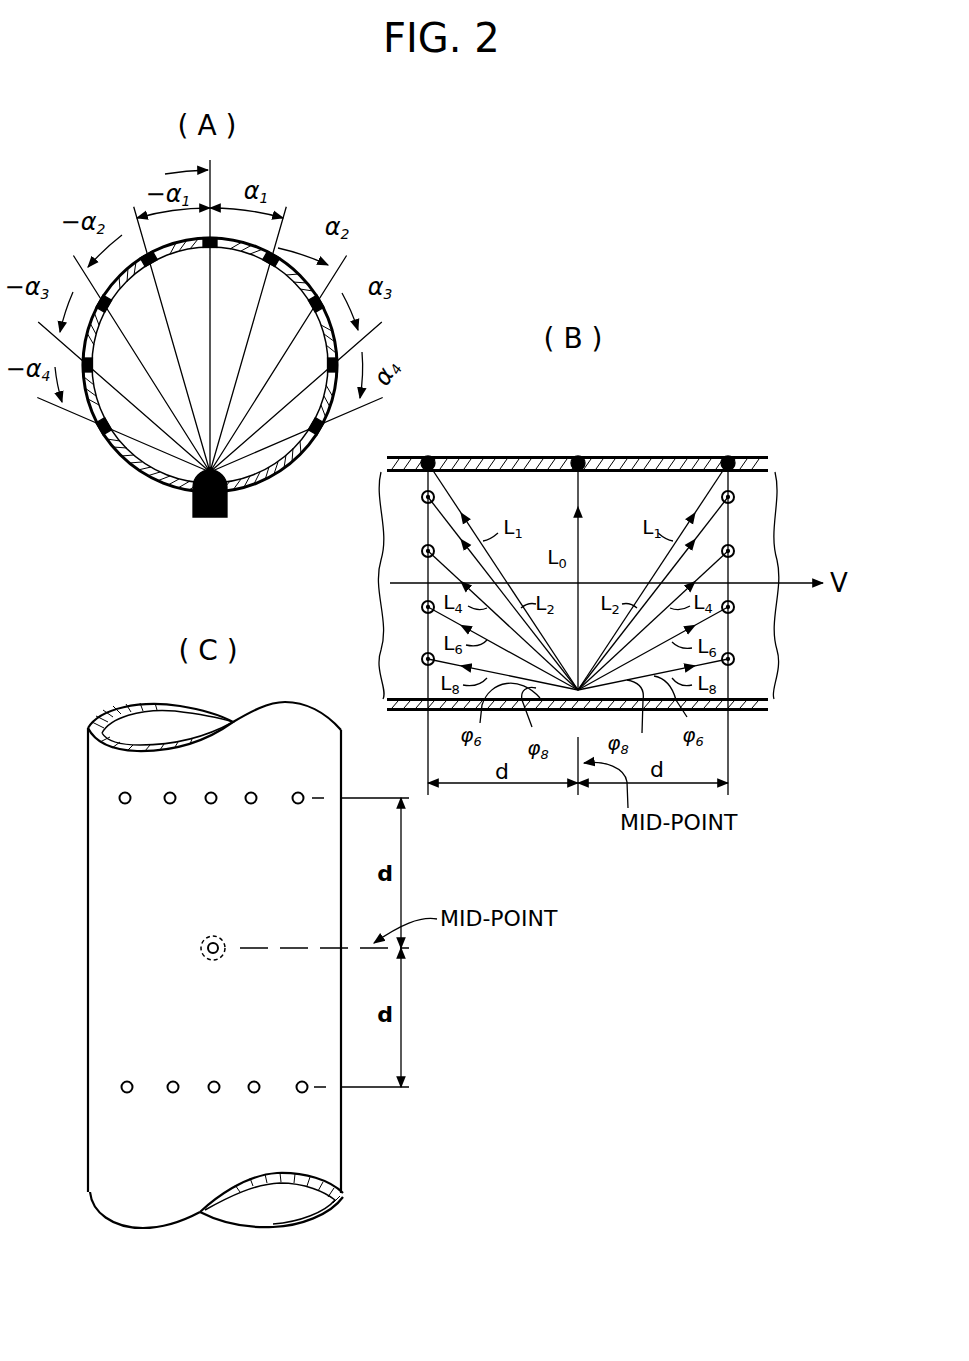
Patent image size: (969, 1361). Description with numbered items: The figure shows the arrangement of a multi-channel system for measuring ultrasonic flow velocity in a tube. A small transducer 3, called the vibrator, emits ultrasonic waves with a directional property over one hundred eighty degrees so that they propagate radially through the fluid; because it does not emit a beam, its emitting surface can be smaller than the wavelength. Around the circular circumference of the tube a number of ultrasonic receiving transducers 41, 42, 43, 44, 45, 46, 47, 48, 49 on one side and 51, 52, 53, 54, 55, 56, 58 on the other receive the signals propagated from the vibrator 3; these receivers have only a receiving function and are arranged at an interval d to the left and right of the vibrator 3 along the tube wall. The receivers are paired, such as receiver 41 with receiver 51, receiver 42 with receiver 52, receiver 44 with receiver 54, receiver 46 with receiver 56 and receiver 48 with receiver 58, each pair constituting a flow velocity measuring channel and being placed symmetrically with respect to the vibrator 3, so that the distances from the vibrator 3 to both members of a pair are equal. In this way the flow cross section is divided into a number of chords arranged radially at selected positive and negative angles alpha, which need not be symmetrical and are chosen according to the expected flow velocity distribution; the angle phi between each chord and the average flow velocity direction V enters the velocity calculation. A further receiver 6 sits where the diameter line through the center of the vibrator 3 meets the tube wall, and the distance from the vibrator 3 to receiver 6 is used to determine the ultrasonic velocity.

The transducer 3 is at (218, 518).
The ultrasonic receiving transducer 41 is at (213, 240).
The ultrasonic receiving transducer 42 is at (151, 252).
The ultrasonic receiving transducer 43 is at (274, 257).
The ultrasonic receiving transducer 44 is at (103, 296).
The ultrasonic receiving transducer 45 is at (316, 306).
The ultrasonic receiving transducer 46 is at (86, 350).
The ultrasonic receiving transducer 47 is at (333, 364).
The ultrasonic receiving transducer 48 is at (101, 437).
The ultrasonic receiving transducer 49 is at (319, 432).
The ultrasonic receiving transducer 51 is at (728, 456).
The ultrasonic receiving transducer 52 is at (734, 497).
The ultrasonic receiving transducer 53 is at (259, 825).
The ultrasonic receiving transducer 54 is at (734, 551).
The ultrasonic receiving transducer 55 is at (305, 825).
The ultrasonic receiving transducer 56 is at (734, 607).
The ultrasonic receiving transducer 58 is at (734, 659).
The receiver 6 is at (578, 456).